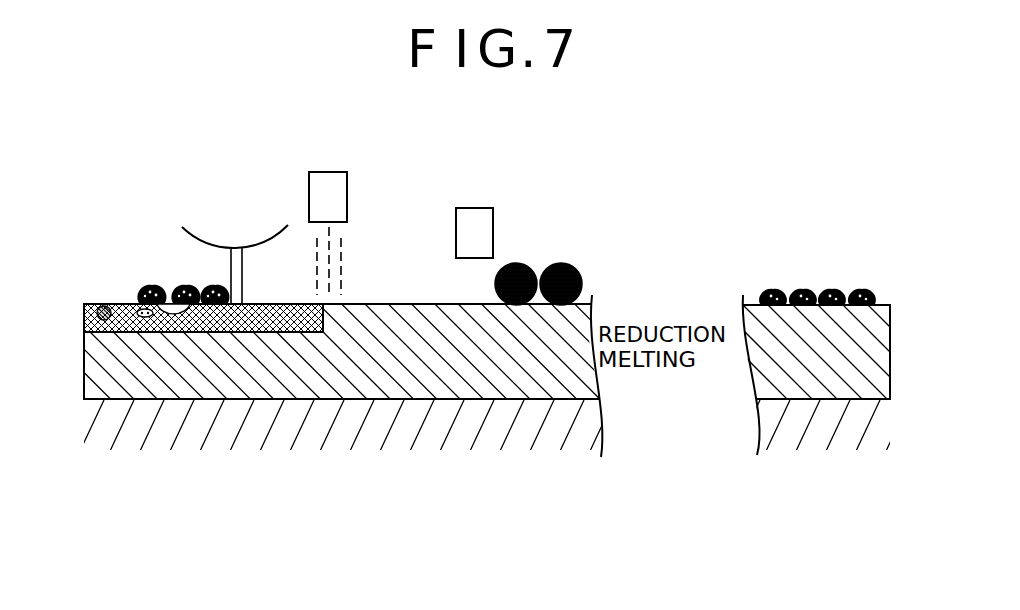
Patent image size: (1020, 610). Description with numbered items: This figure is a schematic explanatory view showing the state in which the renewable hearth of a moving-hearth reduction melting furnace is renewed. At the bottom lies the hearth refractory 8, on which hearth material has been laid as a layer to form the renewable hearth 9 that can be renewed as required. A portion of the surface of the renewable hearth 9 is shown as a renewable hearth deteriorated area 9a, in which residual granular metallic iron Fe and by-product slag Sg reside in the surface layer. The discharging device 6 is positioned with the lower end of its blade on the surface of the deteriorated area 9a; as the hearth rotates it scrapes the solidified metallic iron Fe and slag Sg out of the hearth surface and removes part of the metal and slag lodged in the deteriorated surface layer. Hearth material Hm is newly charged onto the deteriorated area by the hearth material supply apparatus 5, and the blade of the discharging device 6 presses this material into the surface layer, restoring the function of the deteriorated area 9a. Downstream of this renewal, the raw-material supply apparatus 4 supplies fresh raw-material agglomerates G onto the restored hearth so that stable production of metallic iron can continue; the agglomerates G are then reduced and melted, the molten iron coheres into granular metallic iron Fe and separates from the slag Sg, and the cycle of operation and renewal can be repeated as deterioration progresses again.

The raw-material supply apparatus 4 is at (480, 208).
The hearth material supply apparatus 5 is at (331, 172).
The discharging device 6 is at (245, 227).
The hearth refractory 8 is at (117, 437).
The renewable hearth 9 is at (113, 363).
The renewable hearth deteriorated area 9a is at (93, 302).
The by-product slag Sg is at (152, 287).
The granular metallic iron Fe is at (141, 303).
The raw-material agglomerates G is at (563, 265).
The heat / hot gas Hm is at (353, 261).